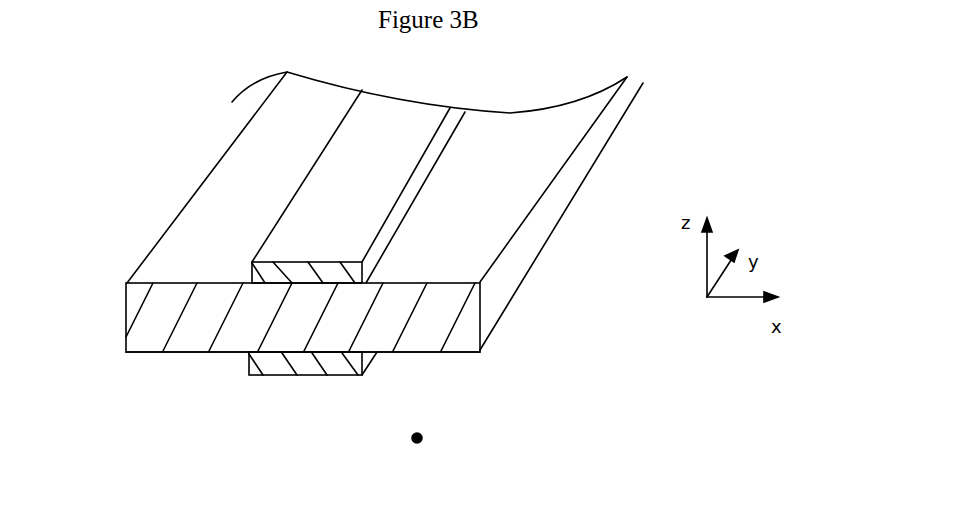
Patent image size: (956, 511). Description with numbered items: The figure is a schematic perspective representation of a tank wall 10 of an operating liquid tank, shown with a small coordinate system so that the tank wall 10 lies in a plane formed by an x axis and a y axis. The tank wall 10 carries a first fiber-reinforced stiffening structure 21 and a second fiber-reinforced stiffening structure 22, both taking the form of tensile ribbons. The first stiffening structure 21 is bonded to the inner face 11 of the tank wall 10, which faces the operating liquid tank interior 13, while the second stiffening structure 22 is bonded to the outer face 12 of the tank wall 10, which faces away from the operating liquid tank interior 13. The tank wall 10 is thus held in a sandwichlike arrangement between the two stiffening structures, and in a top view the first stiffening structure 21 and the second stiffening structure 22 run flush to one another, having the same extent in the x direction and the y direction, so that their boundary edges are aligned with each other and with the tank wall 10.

The tank wall 10 is at (147, 338).
The inner face 11 is at (188, 354).
The outer face 12 is at (550, 147).
The operating liquid tank interior 13 is at (420, 444).
The first fiber-reinforced stiffening structure 21 is at (273, 365).
The second fiber-reinforced stiffening structure 22 is at (295, 233).